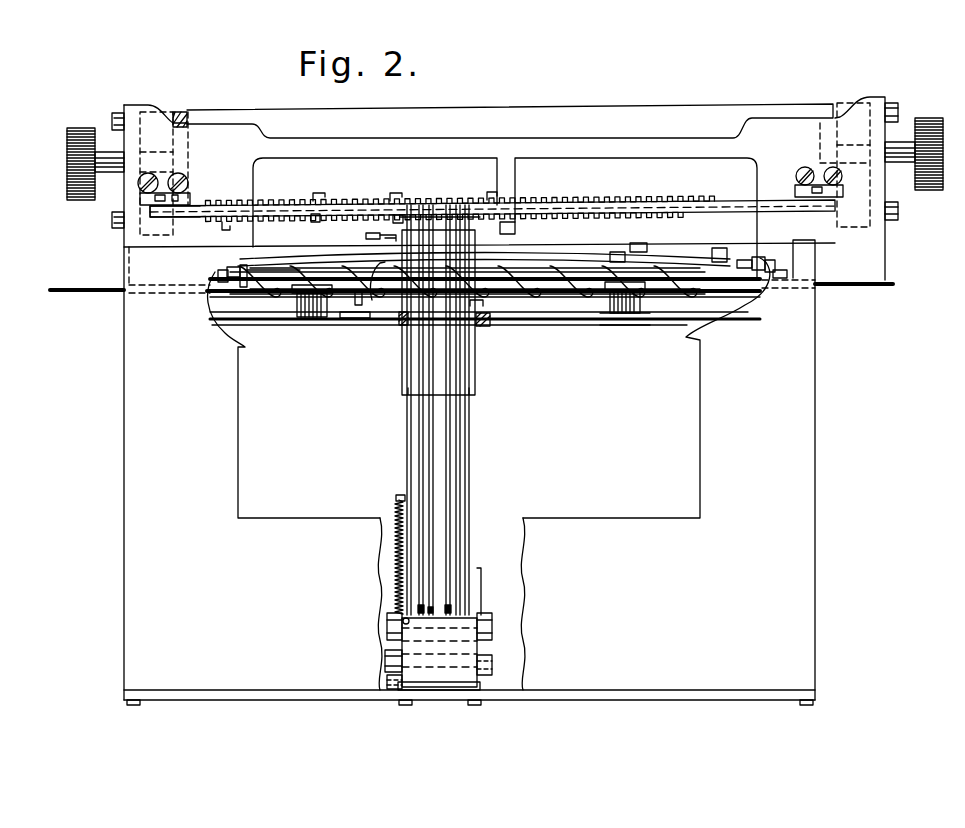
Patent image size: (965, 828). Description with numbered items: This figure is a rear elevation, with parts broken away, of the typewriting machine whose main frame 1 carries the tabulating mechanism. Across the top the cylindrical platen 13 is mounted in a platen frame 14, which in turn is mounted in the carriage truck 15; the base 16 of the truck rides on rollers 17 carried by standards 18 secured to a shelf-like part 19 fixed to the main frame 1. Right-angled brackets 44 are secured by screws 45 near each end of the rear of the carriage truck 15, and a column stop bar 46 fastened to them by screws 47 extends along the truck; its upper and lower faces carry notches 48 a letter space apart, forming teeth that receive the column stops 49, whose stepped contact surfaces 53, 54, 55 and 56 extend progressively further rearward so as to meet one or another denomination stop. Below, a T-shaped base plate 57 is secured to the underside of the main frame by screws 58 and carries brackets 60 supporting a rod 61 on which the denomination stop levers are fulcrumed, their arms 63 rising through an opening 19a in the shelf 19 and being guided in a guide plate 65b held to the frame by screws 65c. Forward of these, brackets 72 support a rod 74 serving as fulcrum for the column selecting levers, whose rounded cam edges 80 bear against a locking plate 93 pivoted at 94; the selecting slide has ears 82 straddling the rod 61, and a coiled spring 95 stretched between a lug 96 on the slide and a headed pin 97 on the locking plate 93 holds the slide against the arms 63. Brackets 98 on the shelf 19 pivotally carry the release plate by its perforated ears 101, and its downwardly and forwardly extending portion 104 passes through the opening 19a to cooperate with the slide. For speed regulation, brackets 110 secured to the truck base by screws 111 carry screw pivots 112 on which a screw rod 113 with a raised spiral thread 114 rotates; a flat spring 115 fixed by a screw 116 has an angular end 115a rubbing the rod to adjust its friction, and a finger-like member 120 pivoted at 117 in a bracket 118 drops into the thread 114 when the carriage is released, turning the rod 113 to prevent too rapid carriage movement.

The main frame 1 is at (627, 519).
The cylindrical platen 13 is at (801, 104).
The platen frame 14 is at (870, 130).
The carriage truck 15 is at (881, 255).
The base 16 is at (571, 283).
The rollers 17 is at (315, 283).
The standards 18 is at (300, 320).
The shelf-like part 19 is at (615, 317).
The opening 19a is at (400, 325).
The right-angled brackets 44 is at (160, 177).
The screws 45 is at (183, 178).
The column stop bar 46 is at (167, 217).
The screws 47 is at (147, 197).
The notches 48 is at (594, 197).
The column stops 49 is at (320, 189).
The contact surface 53 is at (515, 228).
The contact surface 54 is at (398, 217).
The contact surface 55 is at (316, 216).
The contact surface 56 is at (230, 224).
The T-shaped base plate 57 is at (258, 696).
The screws 58 is at (129, 705).
The brackets 60 is at (497, 670).
The rod 61 is at (386, 660).
The arms 63 is at (410, 462).
The guide plate 65b is at (387, 236).
The screws 65c is at (366, 237).
The brackets 72 is at (484, 627).
The rod 74 is at (492, 638).
The cam edges 80 is at (447, 611).
The ears 82 is at (479, 578).
The locking plate 93 is at (442, 690).
The pivot 94 is at (510, 683).
The coiled spring 95 is at (400, 512).
The lug 96 is at (401, 500).
The headed pin 97 is at (408, 622).
The brackets 98 is at (498, 309).
The perforated ears 101 is at (475, 306).
The downwardly and forwardly extending portion 104 is at (473, 362).
The brackets 110 is at (240, 280).
The screws 111 is at (223, 283).
The screw pivots 112 is at (236, 270).
The screw rod 113 is at (282, 268).
The raised spiral thread 114 is at (587, 261).
The flat spring 115 is at (617, 251).
The angular end 115a is at (719, 252).
The screw 116 is at (645, 243).
The pivot 117 is at (356, 294).
The bracket 118 is at (367, 318).
The finger-like member 120 is at (376, 285).